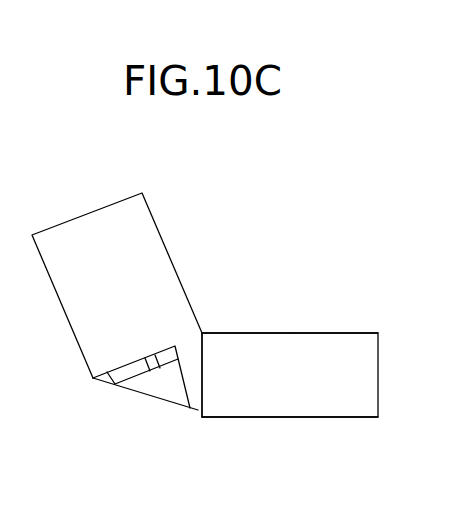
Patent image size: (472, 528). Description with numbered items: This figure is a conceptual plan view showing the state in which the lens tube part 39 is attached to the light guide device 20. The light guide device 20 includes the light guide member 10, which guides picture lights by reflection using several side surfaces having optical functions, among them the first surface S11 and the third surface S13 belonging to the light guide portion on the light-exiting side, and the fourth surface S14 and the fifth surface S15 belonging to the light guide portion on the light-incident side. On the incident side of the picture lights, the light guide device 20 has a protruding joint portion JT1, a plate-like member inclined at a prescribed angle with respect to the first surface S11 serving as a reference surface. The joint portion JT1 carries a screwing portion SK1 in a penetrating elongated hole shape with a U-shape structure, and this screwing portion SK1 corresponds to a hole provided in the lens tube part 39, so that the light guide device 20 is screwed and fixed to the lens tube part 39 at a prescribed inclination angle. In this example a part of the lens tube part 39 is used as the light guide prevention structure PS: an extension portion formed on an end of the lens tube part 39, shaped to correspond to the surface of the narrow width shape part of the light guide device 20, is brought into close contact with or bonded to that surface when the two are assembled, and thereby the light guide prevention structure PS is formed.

The light guide device 20 is at (292, 210).
The lens tube part 39 is at (147, 263).
The light guide member 10 is at (322, 347).
The fourth surface S14 is at (235, 332).
The first surface S11 is at (353, 332).
The third surface S13 is at (268, 417).
The light guide prevention structure PS is at (193, 395).
The fifth surface S15 is at (157, 399).
The screwing portion SK1 is at (153, 371).
The joint portion JT1 is at (127, 375).